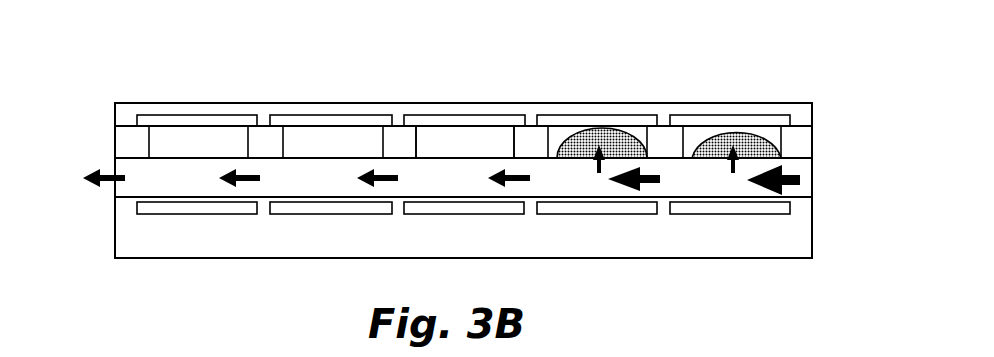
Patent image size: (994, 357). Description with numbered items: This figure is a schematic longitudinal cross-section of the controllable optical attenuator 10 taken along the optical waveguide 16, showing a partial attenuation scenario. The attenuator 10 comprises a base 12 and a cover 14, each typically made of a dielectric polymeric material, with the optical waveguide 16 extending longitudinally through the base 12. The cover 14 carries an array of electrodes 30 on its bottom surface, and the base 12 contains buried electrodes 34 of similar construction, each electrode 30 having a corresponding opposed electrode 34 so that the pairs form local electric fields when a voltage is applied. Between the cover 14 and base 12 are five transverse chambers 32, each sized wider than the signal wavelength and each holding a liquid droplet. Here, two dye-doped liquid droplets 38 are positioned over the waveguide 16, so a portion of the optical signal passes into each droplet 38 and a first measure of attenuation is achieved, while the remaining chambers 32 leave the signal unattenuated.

The controllable optical attenuator 10 is at (803, 60).
The base 12 is at (103, 237).
The cover 14 is at (103, 110).
The optical waveguide 16 is at (803, 189).
The electrodes 30 is at (322, 118).
The transverse chamber 32 is at (461, 138).
The electrodes 34 is at (202, 207).
The liquid droplet 38 is at (630, 128).